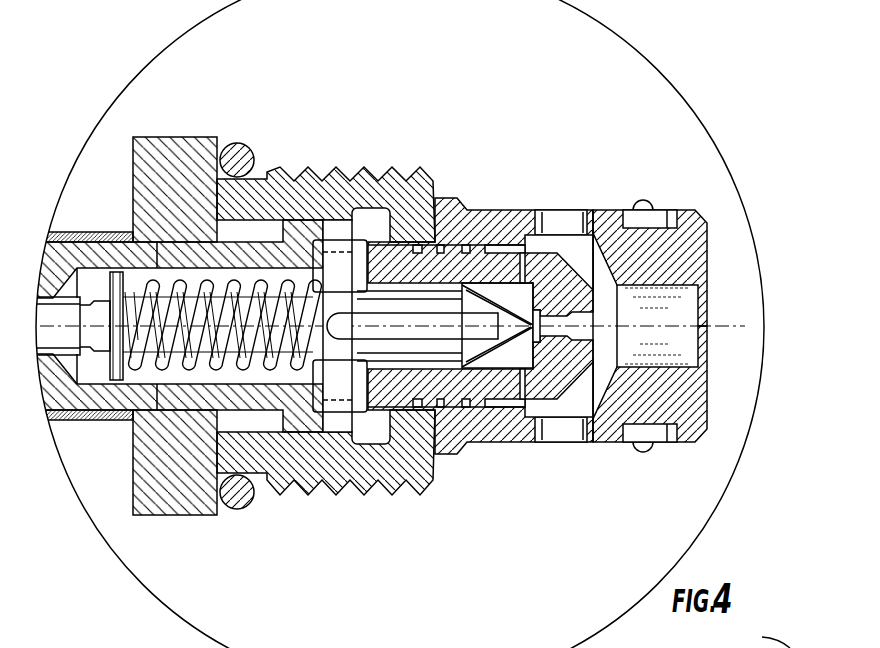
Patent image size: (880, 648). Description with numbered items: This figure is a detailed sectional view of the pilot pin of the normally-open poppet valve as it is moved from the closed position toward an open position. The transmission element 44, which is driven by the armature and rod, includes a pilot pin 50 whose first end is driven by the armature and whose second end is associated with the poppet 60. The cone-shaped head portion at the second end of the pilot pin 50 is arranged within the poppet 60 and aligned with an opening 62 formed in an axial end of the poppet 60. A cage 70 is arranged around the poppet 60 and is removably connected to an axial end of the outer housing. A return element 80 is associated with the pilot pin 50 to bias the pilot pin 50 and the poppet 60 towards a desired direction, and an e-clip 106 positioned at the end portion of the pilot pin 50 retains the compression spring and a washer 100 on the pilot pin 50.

The transmission element 44 is at (523, 316).
The pilot pin 50 is at (422, 350).
The poppet 60 is at (473, 277).
The opening 62 is at (548, 347).
The cage 70 is at (668, 405).
The return element 80 is at (148, 298).
The washer 100 is at (333, 263).
The e-clip 106 is at (118, 378).